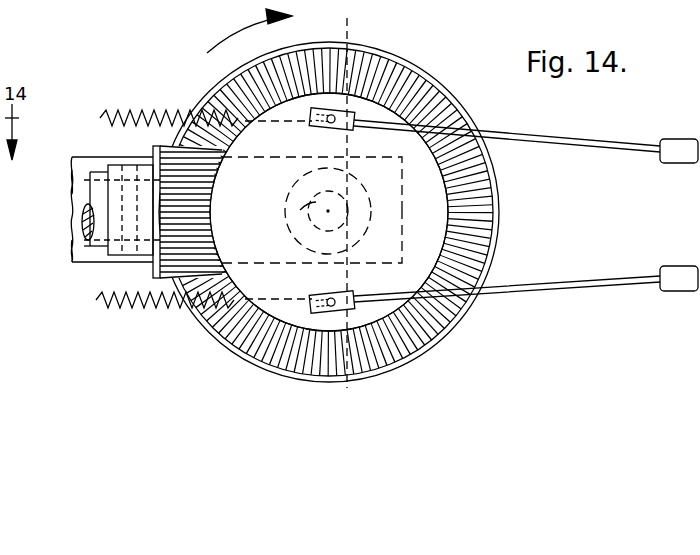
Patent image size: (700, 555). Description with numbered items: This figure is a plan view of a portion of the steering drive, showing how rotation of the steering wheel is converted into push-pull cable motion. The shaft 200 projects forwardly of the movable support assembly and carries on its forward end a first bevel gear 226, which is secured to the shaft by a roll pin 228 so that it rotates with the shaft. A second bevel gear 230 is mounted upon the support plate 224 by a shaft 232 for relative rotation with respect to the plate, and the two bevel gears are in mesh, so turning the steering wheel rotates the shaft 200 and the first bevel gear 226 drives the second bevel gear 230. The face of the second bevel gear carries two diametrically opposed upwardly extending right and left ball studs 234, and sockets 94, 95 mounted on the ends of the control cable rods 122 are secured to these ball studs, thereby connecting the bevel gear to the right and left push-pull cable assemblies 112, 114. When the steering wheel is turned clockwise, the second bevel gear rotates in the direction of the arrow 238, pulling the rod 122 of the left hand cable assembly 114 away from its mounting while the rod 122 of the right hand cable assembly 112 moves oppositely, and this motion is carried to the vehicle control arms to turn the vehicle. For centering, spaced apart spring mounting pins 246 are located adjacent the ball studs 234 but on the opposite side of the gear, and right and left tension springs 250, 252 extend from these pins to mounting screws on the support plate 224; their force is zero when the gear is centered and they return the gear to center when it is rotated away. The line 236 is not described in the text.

The second bevel gear 230 is at (417, 70).
The first bevel gear 226 is at (152, 274).
The support plate 224 is at (100, 157).
The roll pin 228 is at (72, 172).
The shaft 200 is at (72, 250).
The left tension spring 252 is at (138, 108).
The right tension spring 250 is at (120, 310).
The upper axis line 236 is at (350, 42).
The right and left ball studs 234 is at (354, 382).
The arrow 238 is at (244, 30).
The shaft 232 is at (300, 210).
The socket 95 is at (350, 132).
The socket 94 is at (350, 290).
The spring mounting pins 246 is at (302, 140).
The rod 122 is at (576, 138).
The right push-pull cable assembly 112 is at (680, 124).
The left hand push-pull cable assembly 114 is at (674, 312).